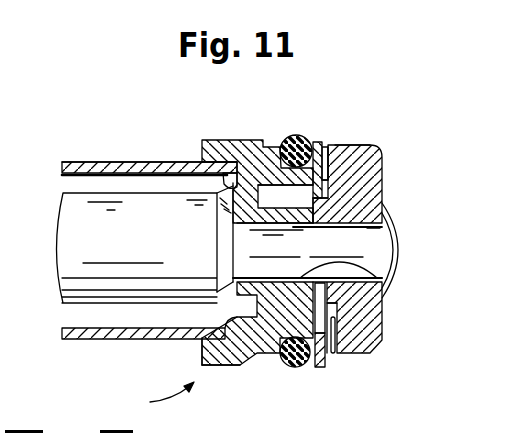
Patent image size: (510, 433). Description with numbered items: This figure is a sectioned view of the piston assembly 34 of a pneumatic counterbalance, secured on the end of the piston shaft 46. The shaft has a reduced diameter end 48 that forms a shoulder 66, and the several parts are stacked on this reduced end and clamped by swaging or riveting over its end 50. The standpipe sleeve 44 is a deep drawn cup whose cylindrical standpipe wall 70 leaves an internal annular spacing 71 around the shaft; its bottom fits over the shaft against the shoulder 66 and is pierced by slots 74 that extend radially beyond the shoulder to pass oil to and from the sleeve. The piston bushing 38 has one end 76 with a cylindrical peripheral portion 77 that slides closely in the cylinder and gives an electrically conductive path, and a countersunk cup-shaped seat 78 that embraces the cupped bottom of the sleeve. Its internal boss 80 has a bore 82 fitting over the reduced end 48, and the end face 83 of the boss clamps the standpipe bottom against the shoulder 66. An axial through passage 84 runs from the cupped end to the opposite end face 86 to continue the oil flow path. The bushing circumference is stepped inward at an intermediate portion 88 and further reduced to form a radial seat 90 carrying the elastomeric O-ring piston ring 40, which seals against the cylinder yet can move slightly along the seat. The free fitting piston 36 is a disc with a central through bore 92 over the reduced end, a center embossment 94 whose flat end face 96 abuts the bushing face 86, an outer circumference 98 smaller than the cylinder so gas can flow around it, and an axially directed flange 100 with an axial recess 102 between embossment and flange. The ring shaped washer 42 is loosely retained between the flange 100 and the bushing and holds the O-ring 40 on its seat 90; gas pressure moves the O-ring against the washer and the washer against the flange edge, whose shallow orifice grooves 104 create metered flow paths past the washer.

The piston assembly 34 is at (160, 397).
The free fitting piston 36 is at (362, 160).
The piston bushing 38 is at (236, 145).
The piston ring 40 is at (293, 135).
The piston ring washer 42 is at (317, 141).
The standpipe sleeve 44 is at (91, 161).
The piston shaft 46 is at (63, 197).
The end 48 is at (343, 249).
The end 50 is at (399, 250).
The shoulder 66 is at (236, 246).
The standpipe wall 70 is at (75, 162).
The internal annular spacing 71 is at (113, 182).
The slots 74 is at (216, 211).
The end 76 is at (200, 357).
The cylindrical peripheral portion 77 is at (226, 366).
The cup-shaped seat 78 is at (223, 182).
The internal boss 80 is at (280, 364).
The bore 82 is at (366, 272).
The end face 83 is at (235, 287).
The through passage 84 is at (268, 183).
The end face 86 is at (336, 200).
The intermediate portion 88 is at (273, 284).
The radial seat 90 is at (304, 367).
The through bore 92 is at (386, 223).
The center embossment 94 is at (334, 323).
The end face 96 is at (310, 225).
The outer circumference 98 is at (350, 146).
The axially directed flange 100 is at (330, 147).
The recess 102 is at (333, 170).
The orifice grooves 104 is at (334, 354).